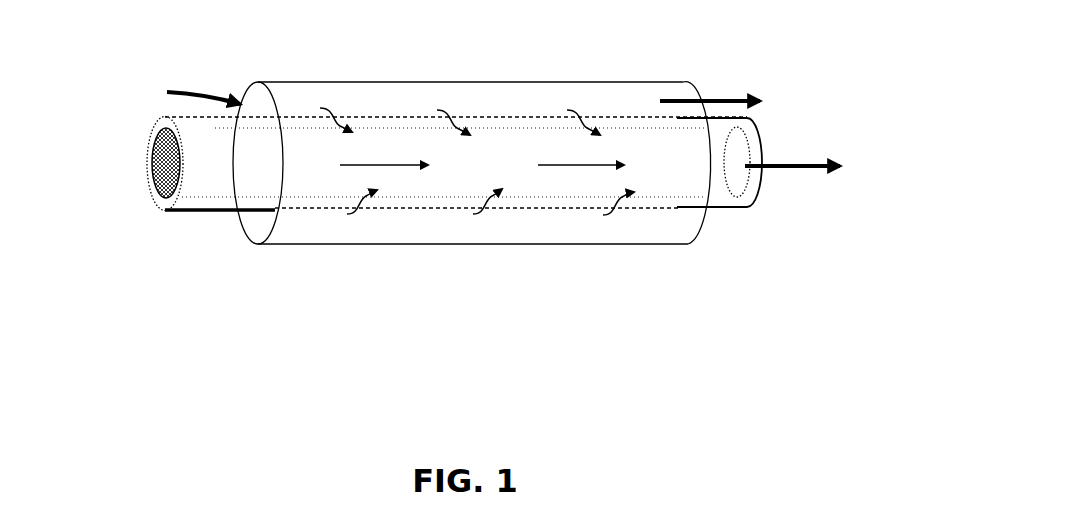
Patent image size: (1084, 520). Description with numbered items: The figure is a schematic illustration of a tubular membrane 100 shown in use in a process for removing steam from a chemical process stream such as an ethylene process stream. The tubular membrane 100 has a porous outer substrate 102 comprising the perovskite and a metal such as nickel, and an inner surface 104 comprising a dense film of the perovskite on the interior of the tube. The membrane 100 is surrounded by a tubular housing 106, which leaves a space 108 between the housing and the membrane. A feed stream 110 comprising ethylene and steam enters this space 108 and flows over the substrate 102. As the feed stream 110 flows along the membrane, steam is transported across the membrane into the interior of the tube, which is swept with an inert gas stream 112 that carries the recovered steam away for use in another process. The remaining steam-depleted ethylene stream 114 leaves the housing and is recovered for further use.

The tubular membrane 100 is at (152, 222).
The porous outer substrate 102 is at (225, 206).
The inner surface 104 is at (160, 137).
The outer shell housing 106 is at (510, 244).
The space 108 is at (477, 159).
The feed stream 110 is at (215, 97).
The inert gas stream 112 is at (777, 168).
The steam-depleted ethylene stream 114 is at (713, 96).